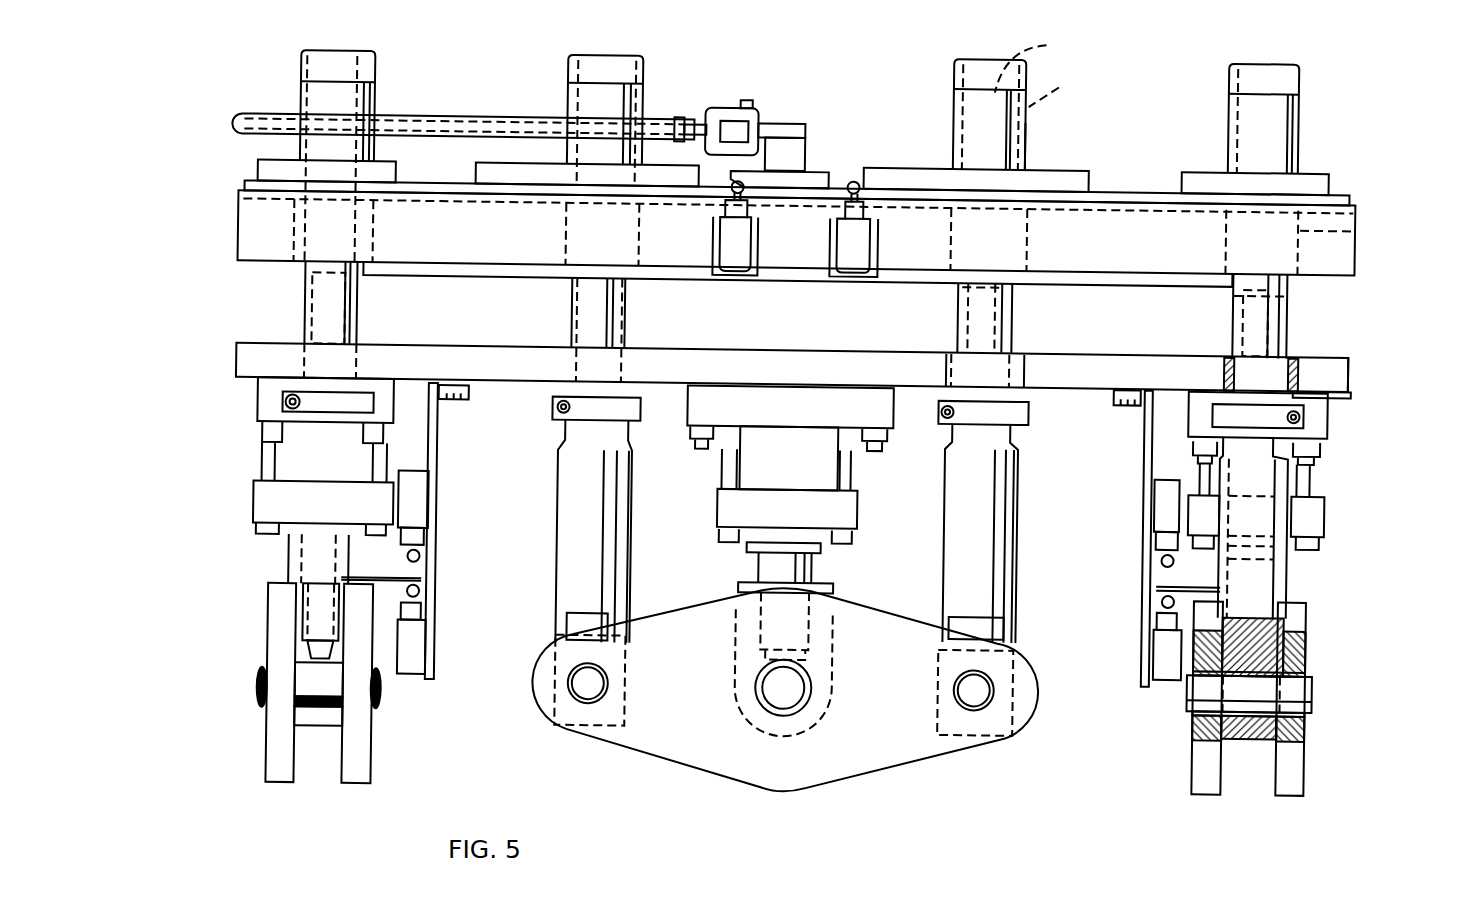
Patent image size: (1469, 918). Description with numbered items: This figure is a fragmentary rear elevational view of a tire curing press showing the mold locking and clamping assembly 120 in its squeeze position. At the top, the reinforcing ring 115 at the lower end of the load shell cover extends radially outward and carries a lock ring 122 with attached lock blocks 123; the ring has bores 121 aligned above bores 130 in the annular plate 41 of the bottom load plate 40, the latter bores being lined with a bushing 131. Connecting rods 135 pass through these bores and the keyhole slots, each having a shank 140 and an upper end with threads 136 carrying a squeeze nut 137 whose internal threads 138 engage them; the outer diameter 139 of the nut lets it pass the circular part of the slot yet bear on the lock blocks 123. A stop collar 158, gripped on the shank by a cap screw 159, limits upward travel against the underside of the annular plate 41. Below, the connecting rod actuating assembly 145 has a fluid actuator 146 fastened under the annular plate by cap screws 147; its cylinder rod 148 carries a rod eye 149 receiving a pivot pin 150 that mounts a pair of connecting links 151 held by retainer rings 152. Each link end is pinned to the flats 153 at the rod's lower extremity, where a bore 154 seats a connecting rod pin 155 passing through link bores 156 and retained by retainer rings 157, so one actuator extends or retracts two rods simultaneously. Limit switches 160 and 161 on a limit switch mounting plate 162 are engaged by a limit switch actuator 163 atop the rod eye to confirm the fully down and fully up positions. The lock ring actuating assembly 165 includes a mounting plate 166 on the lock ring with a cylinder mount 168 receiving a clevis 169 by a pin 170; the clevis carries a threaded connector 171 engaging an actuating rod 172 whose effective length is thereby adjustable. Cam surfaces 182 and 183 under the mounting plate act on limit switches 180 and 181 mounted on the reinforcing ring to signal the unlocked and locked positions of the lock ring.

The bottom load plate 40 is at (1401, 379).
The annular plate 41 is at (1362, 409).
The reinforcing ring 115 is at (841, 239).
The mold locking and clamping assembly 120 is at (755, 211).
The bores 121 is at (839, 236).
The lock ring 122 is at (775, 162).
The lock blocks 123 is at (765, 134).
The bores 130 is at (837, 347).
The bushing 131 is at (1319, 404).
The connecting rods 135 is at (1312, 212).
The threads 136 is at (1044, 64).
The squeeze nut 137 is at (1033, 206).
The internal threads 138 is at (1067, 89).
The outer diameter 139 is at (1078, 147).
The shank 140 is at (1343, 228).
The connecting rod actuating assembly 145 is at (728, 595).
The fluid actuator 146 is at (755, 489).
The cap screws 147 is at (1028, 489).
The cylinder rod 148 is at (835, 567).
The rod eye 149 is at (619, 703).
The pivot pin 150 is at (593, 705).
The connecting link 151 is at (742, 703).
The retainer rings 152 is at (570, 709).
The flats 153 is at (977, 657).
The bore 154 is at (1308, 648).
The connecting rod pin 155 is at (989, 721).
The bores 156 is at (1256, 746).
The retainer rings 157 is at (1279, 697).
The stop collar 158 is at (738, 403).
The cap screw 159 is at (749, 367).
The limit switch 160 is at (457, 625).
The limit switch 161 is at (456, 508).
The limit switch mounting plate 162 is at (468, 531).
The limit switch actuator 163 is at (427, 561).
The lock ring actuating assembly 165 is at (463, 91).
The mounting plate 166 is at (818, 139).
The cylinder mount 168 is at (814, 119).
The clevis 169 is at (725, 94).
The pin 170 is at (768, 74).
The threaded connector 171 is at (675, 93).
The actuating rod 172 is at (464, 97).
The limit switch 180 is at (888, 235).
The limit switch 181 is at (699, 233).
The cam surface 182 is at (878, 163).
The cam surface 183 is at (693, 166).